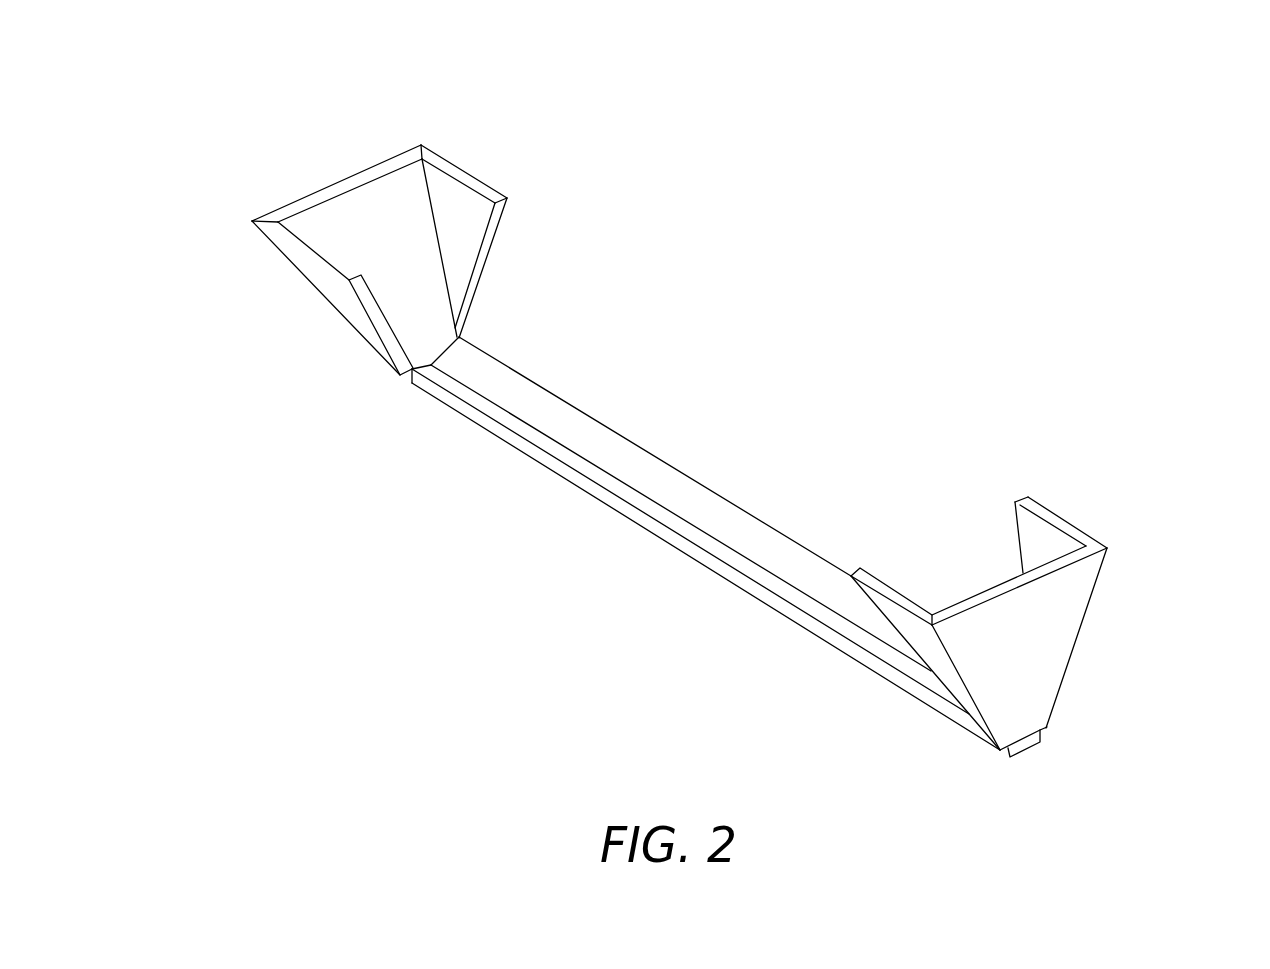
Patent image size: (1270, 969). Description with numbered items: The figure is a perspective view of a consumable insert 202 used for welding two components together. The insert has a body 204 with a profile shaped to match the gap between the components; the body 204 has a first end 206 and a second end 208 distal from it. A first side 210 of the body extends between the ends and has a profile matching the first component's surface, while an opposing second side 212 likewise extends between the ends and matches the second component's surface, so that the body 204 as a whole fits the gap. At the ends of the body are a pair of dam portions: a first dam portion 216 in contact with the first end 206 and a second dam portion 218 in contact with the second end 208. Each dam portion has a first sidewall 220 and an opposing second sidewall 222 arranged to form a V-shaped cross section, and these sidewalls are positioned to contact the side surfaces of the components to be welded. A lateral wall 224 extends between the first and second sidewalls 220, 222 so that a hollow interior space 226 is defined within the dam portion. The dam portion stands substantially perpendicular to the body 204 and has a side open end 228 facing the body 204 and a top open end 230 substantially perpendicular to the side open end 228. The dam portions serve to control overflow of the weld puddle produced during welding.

The consumable insert 202 is at (917, 252).
The body 204 is at (620, 470).
The first end 206 is at (235, 259).
The second end 208 is at (1068, 700).
The first side 210 is at (688, 548).
The second side 212 is at (733, 508).
The first dam portion 216 is at (480, 166).
The second dam portion 218 is at (1122, 573).
The first sidewall 220 is at (340, 288).
The second sidewall 222 is at (497, 235).
The lateral wall 224 is at (337, 178).
The hollow interior space 226 is at (407, 262).
The side open end 228 is at (490, 320).
The top open end 230 is at (431, 133).